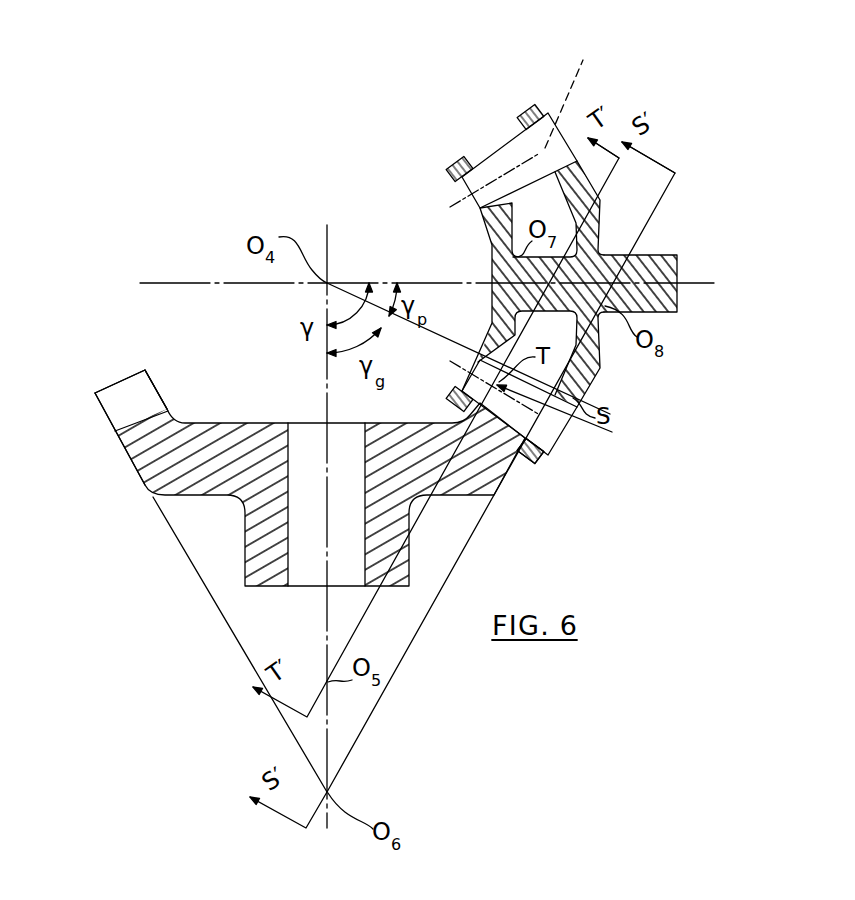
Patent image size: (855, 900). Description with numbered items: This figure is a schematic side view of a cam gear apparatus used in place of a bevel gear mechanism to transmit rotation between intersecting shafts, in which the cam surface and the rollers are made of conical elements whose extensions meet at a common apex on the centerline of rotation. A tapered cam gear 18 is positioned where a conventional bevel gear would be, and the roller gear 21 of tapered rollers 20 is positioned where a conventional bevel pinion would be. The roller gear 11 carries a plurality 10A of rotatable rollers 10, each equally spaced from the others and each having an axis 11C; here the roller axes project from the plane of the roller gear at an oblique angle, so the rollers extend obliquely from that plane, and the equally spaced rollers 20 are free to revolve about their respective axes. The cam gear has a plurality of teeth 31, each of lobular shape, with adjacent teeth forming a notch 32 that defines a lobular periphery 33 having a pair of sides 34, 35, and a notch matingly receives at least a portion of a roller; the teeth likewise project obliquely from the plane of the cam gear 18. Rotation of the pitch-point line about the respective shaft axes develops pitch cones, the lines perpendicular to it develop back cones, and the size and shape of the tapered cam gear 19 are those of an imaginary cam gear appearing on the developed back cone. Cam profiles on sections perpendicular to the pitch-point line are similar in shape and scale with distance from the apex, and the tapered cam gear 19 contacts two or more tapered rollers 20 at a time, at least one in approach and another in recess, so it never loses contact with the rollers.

The plurality of rotatable rollers 10A is at (579, 280).
The rotatable roller 10 is at (512, 143).
The roller gear 11 is at (605, 83).
The roller axis 11C is at (626, 375).
The tapered roller 20 is at (500, 148).
The roller gear 21 is at (653, 254).
The tapered cam gear 18 is at (279, 448).
The tapered cam gear 19 is at (100, 370).
The notch 32 is at (163, 388).
The lobular periphery 33 is at (98, 427).
The side of lobular periphery 34 is at (110, 398).
The teeth 31 is at (632, 413).
The side of lobular periphery 35 is at (537, 466).